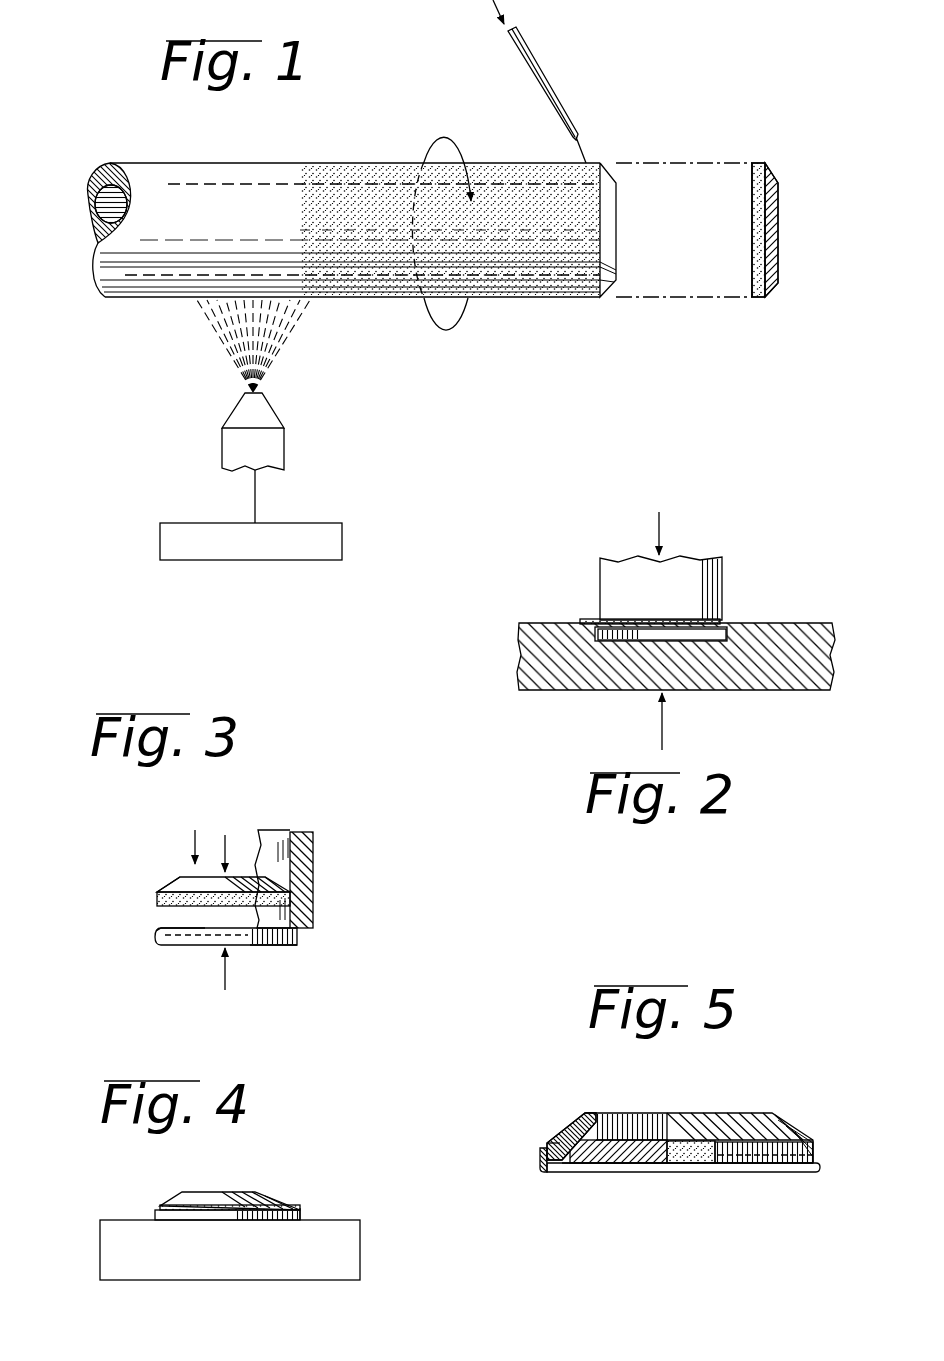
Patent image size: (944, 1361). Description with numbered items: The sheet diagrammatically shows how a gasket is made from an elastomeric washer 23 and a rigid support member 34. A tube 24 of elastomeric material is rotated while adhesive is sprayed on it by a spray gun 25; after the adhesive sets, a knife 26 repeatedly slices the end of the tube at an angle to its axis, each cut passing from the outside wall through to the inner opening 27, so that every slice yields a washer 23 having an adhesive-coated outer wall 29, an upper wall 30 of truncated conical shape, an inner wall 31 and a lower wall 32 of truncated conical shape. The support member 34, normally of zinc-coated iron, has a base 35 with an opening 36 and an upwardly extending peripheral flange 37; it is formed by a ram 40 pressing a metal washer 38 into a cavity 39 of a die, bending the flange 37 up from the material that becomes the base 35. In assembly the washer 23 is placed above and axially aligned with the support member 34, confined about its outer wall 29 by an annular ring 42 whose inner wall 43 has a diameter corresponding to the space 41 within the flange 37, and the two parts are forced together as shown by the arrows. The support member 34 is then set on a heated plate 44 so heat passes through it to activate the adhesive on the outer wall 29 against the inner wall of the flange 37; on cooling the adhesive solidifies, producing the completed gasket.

In FIG. 1, the elastomeric washer 23 is at (780, 229).
In FIG. 3, the elastomeric washer 23 is at (223, 894).
In FIG. 4, the elastomeric washer 23 is at (263, 1188).
In FIG. 5, the elastomeric washer 23 is at (724, 1103).
In FIG. 1, the tube 24 is at (249, 160).
In FIG. 1, the spray gun 25 is at (222, 446).
In FIG. 1, the knife 26 is at (546, 72).
In FIG. 1, the inner opening 27 is at (168, 184).
In FIG. 1, the outer wall 29 is at (757, 163).
In FIG. 3, the outer wall 29 is at (157, 899).
In FIG. 5, the outer wall 29 is at (546, 1142).
In FIG. 1, the upper wall 30 is at (768, 172).
In FIG. 3, the upper wall 30 is at (178, 879).
In FIG. 5, the upper wall 30 is at (573, 1127).
In FIG. 1, the inner wall 31 is at (772, 193).
In FIG. 5, the inner wall 31 is at (590, 1150).
In FIG. 1, the lower wall 32 is at (751, 182).
In FIG. 5, the lower wall 32 is at (597, 1170).
In FIG. 3, the support member 34 is at (180, 950).
In FIG. 4, the support member 34 is at (150, 1213).
In FIG. 5, the support member 34 is at (827, 1152).
In FIG. 3, the base 35 is at (278, 946).
In FIG. 5, the base 35 is at (694, 1168).
In FIG. 2, the opening 36 is at (625, 620).
In FIG. 5, the opening 36 is at (626, 1172).
In FIG. 3, the peripheral flange 37 is at (160, 931).
In FIG. 4, the peripheral flange 37 is at (300, 1215).
In FIG. 5, the peripheral flange 37 is at (541, 1160).
In FIG. 2, the washer 38 is at (736, 620).
In FIG. 2, the cavity 39 is at (700, 640).
In FIG. 2, the ram 40 is at (716, 566).
In FIG. 3, the space 41 is at (238, 942).
In FIG. 5, the space 41 is at (572, 1165).
In FIG. 3, the annular ring 42 is at (313, 857).
In FIG. 3, the inner wall 43 is at (274, 843).
In FIG. 4, the heated plate 44 is at (306, 1262).